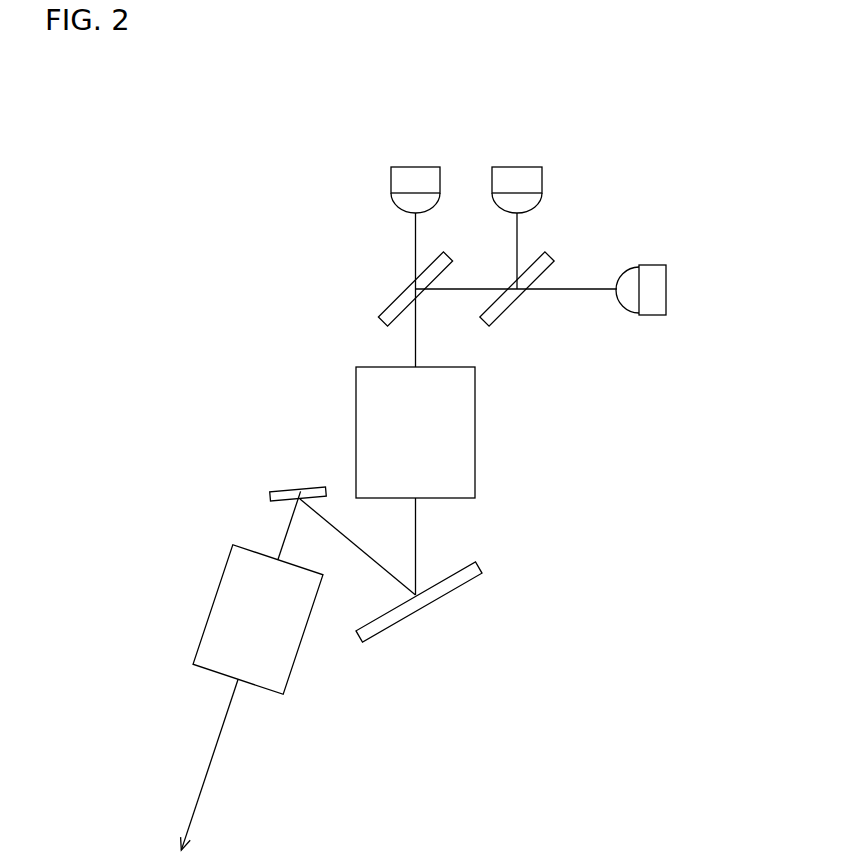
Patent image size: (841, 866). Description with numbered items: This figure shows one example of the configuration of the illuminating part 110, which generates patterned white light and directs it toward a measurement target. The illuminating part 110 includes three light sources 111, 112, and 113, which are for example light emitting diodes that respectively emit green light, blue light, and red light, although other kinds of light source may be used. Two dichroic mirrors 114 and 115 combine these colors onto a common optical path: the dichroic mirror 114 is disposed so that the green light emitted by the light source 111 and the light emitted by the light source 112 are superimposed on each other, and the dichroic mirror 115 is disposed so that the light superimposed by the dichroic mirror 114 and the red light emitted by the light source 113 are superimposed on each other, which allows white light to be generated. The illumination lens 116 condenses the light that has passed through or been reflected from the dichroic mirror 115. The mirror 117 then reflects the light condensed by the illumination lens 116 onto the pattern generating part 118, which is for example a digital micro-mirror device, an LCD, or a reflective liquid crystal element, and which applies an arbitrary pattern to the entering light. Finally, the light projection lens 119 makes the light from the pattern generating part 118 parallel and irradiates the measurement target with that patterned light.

The illuminating part 110 is at (180, 100).
The light source 111 is at (652, 264).
The light source 112 is at (518, 166).
The light source 113 is at (417, 166).
The dichroic mirror 114 is at (551, 254).
The dichroic mirror 115 is at (449, 254).
The illumination lens 116 is at (475, 432).
The mirror 117 is at (421, 610).
The pattern generating part 118 is at (298, 488).
The light projection lens 119 is at (212, 605).